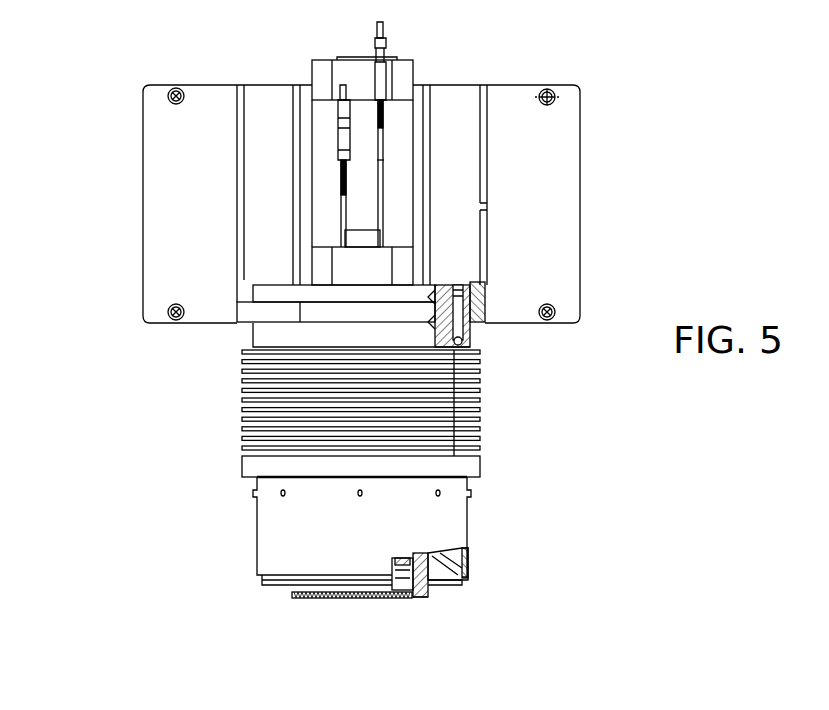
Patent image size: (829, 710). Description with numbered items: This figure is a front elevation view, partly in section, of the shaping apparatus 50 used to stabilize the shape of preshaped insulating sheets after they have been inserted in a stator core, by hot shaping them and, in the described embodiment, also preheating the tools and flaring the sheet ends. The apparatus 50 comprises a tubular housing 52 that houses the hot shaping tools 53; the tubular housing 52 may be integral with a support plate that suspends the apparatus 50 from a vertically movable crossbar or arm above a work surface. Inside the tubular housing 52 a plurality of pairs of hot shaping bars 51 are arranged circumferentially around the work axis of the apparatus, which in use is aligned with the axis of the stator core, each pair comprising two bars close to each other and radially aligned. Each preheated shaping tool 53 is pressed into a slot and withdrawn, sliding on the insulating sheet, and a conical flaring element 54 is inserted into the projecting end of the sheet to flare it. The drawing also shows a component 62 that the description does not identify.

The shaping apparatus 50 is at (102, 154).
The pair of hot shaping bars 51 is at (150, 250).
The tubular housing 52 is at (256, 466).
The shaping tool 53 is at (418, 600).
The conical flaring element 54 is at (291, 595).
The housing 62 is at (268, 551).